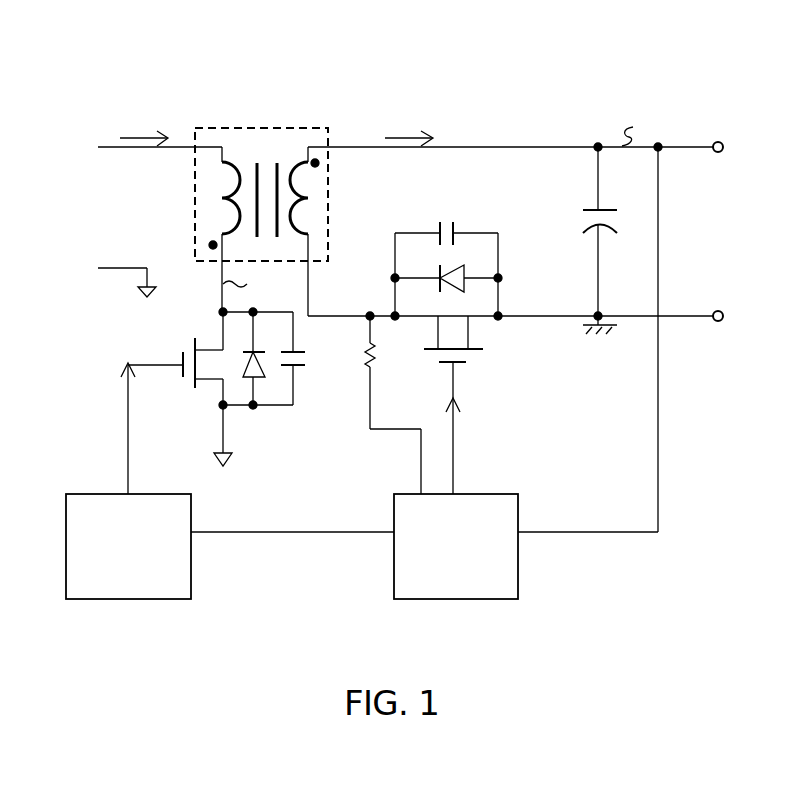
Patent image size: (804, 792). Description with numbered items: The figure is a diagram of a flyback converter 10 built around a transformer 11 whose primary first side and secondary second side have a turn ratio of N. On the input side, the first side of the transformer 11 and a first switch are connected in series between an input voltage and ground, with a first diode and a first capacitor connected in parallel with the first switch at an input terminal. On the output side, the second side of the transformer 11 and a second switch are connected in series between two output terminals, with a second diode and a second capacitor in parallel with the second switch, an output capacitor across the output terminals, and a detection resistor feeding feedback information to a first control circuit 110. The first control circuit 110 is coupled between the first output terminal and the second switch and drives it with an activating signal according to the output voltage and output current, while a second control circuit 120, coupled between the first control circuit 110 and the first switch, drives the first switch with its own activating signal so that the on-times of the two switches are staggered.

The flyback converter 10 is at (366, 51).
The transformer 11 is at (212, 123).
The first control circuit 110 is at (490, 493).
The second control circuit 120 is at (82, 493).